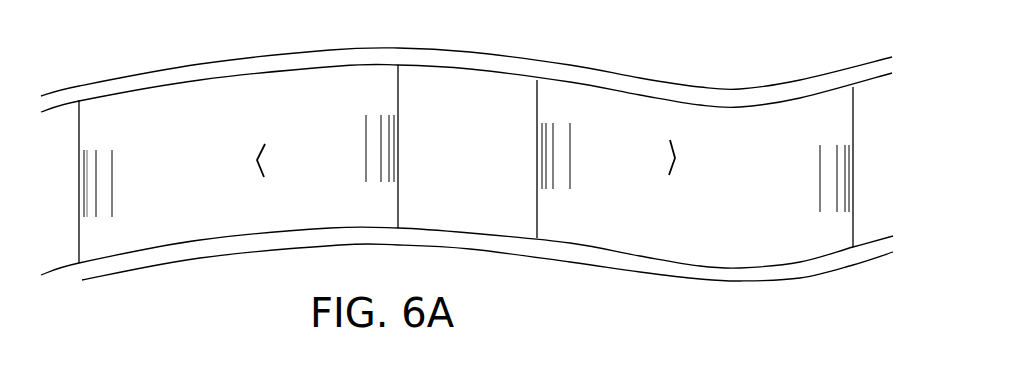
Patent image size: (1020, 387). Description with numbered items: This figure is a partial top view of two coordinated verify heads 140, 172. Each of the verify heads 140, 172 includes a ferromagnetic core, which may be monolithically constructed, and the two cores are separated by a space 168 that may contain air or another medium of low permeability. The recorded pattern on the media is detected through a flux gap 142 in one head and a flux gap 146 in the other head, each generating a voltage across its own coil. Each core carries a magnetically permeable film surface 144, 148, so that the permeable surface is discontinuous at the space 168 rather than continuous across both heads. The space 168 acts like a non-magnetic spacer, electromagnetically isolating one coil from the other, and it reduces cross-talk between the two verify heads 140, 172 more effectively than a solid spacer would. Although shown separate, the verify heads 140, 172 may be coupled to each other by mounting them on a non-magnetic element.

The verify head 140 is at (152, 288).
The flux gap 142 is at (250, 166).
The magnetically permeable film surface 144 is at (230, 137).
The flux gap 146 is at (663, 164).
The magnetically permeable film surface 148 is at (750, 161).
The space 168 is at (476, 222).
The verify head 172 is at (625, 284).